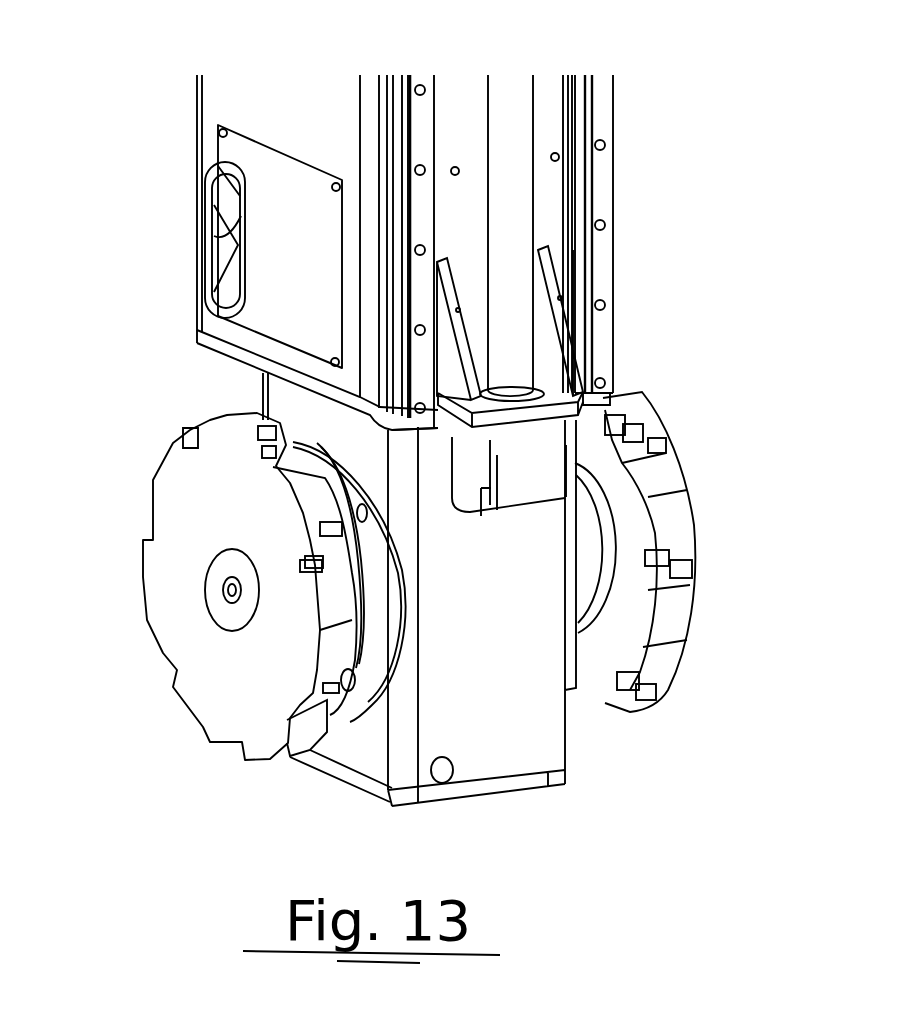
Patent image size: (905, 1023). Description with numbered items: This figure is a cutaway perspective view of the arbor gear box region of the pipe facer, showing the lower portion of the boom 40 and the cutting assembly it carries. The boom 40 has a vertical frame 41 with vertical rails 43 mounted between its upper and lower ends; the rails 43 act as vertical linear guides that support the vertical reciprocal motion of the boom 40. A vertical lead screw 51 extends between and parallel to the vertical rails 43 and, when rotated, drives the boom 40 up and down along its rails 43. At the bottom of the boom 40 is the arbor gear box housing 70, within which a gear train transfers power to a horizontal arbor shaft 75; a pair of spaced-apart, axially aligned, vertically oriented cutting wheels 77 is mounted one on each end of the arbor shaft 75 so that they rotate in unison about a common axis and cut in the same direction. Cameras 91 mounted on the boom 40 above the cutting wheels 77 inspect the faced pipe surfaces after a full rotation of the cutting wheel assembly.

The boom 40 is at (124, 80).
The vertical frame 41 is at (196, 207).
The vertical rails 43 is at (598, 102).
The vertical lead screw 51 is at (515, 215).
The spindle housing 70 is at (543, 742).
The horizontal arbor shaft 75 is at (215, 592).
The cutting wheels 77 is at (203, 730).
The cameras 91 is at (228, 227).